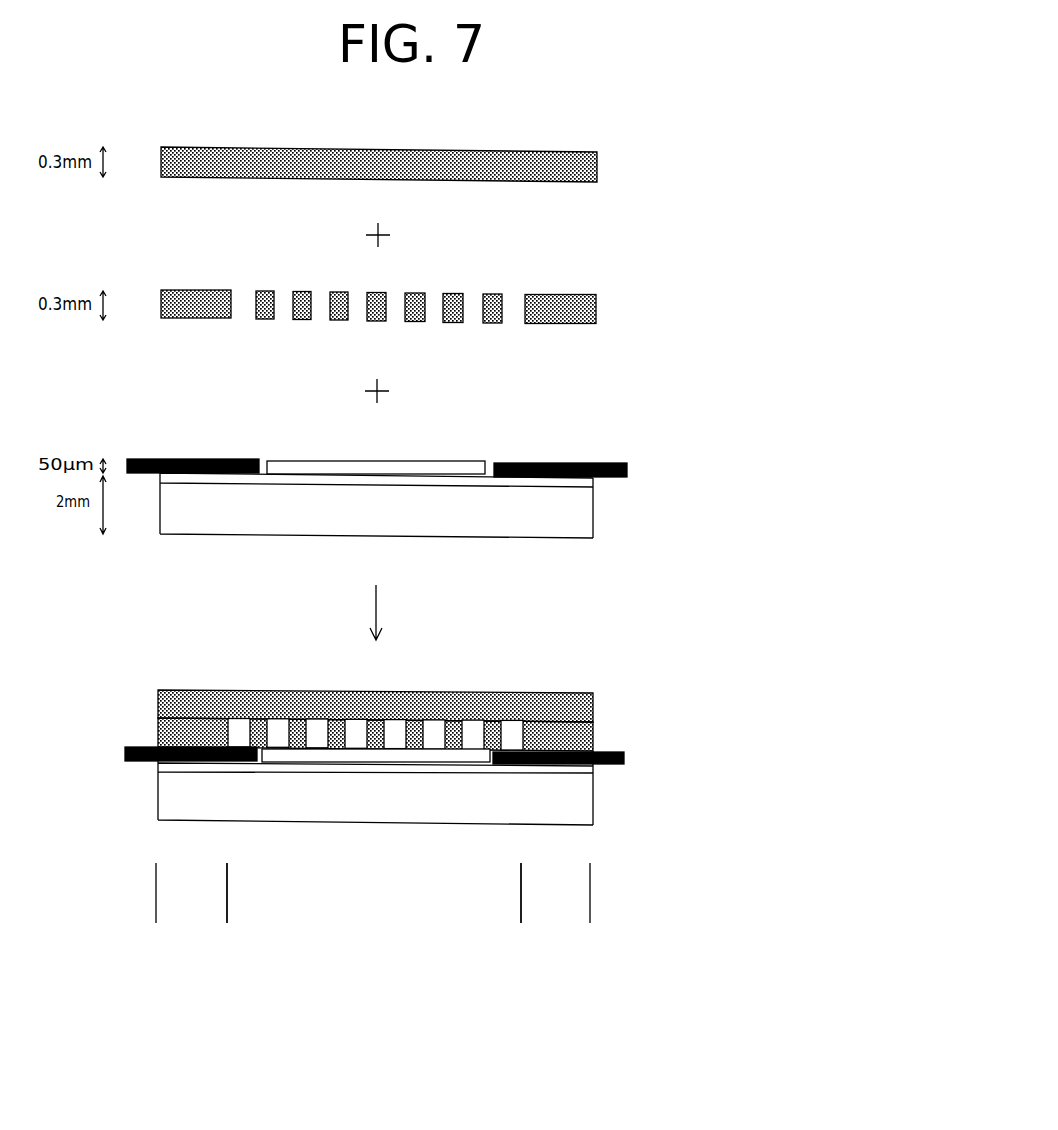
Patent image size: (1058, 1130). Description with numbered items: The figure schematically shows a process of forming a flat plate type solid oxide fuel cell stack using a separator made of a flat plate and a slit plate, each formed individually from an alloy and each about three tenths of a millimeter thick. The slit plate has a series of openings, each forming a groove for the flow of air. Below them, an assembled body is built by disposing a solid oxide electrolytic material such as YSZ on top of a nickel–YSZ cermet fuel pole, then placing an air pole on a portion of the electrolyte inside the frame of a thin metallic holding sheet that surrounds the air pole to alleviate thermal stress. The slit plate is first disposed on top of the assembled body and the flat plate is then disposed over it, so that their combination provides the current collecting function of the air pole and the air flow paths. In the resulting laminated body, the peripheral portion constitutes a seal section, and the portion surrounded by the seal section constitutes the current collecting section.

The element flat plate is at (590, 168).
The element slit plate is at (585, 308).
The element groove is at (324, 321).
The element air pole is at (445, 465).
The element YSZ is at (587, 482).
The element assembled body is at (512, 618).
The element seal section is at (220, 904).